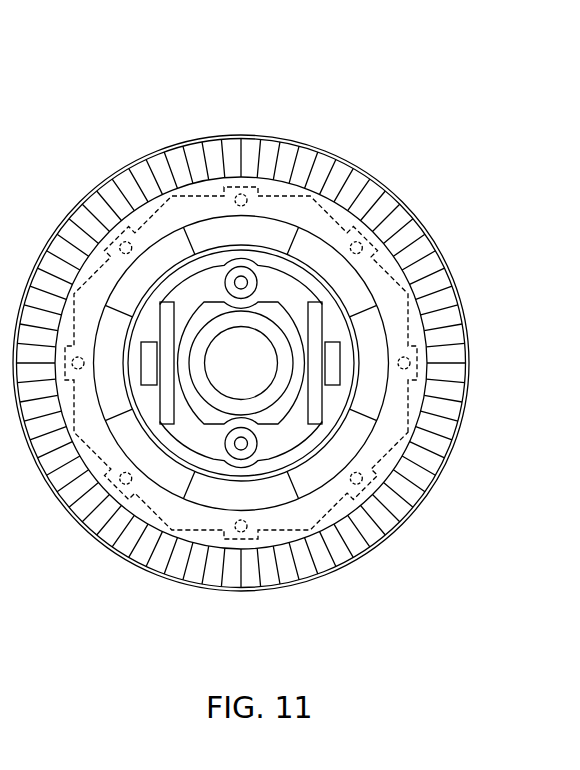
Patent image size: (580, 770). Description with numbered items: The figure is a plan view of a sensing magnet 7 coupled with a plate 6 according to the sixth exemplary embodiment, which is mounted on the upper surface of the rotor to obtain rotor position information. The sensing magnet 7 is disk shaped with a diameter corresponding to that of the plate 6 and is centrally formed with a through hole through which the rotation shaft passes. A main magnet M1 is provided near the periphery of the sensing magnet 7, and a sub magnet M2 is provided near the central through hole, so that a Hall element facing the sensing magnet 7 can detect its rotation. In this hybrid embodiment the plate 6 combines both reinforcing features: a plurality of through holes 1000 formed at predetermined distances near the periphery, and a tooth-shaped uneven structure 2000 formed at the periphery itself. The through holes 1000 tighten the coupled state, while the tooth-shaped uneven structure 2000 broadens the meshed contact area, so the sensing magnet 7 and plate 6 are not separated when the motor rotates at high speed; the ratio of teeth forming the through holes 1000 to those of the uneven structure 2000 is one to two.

The plate 6 is at (235, 185).
The sensing magnet 7 is at (418, 108).
The through holes 1000 is at (398, 516).
The tooth-shaped uneven structure 2000 is at (441, 452).
The main magnet M1 is at (300, 558).
The sub magnet M2 is at (158, 478).